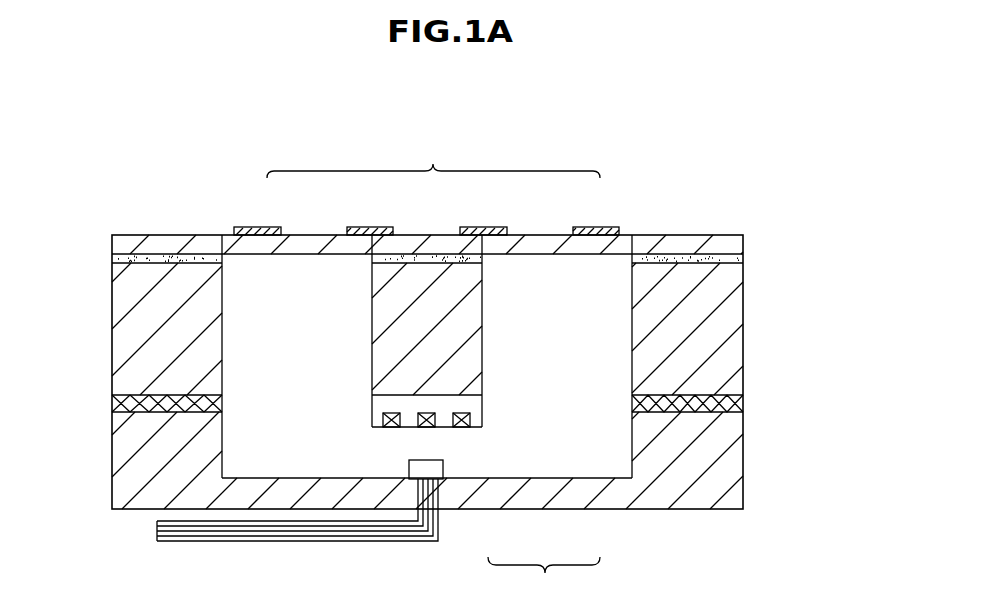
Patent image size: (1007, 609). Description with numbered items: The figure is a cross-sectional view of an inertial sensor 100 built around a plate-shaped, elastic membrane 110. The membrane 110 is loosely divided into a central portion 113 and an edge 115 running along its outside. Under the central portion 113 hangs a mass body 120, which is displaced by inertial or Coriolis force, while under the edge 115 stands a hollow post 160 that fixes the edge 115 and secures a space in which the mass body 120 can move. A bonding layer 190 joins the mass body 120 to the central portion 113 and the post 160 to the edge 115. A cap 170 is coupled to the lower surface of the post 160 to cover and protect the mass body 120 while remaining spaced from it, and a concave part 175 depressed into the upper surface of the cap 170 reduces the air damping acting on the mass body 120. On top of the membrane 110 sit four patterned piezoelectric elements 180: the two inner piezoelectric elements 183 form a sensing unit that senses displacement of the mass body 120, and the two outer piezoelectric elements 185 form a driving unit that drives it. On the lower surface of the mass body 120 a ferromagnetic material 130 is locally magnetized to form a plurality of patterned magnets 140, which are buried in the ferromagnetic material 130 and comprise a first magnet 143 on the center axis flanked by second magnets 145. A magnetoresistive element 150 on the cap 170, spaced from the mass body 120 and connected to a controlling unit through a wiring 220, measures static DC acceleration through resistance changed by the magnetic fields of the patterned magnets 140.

The inertial sensor 100 is at (243, 103).
The membrane 110 is at (756, 240).
The central portion 113 is at (433, 247).
The edge 115 is at (160, 245).
The mass body 120 is at (448, 337).
The ferromagnetic material 130 is at (470, 406).
The patterned magnets 140 is at (544, 579).
The first magnet 143 is at (427, 427).
The second magnets 145 is at (392, 427).
The magnetoresistive element 150 is at (415, 467).
The post 160 is at (124, 347).
The cap 170 is at (720, 470).
The concave part 175 is at (308, 461).
The piezoelectric element 180 is at (433, 159).
The inner piezoelectric elements 183 is at (371, 227).
The outer piezoelectric elements 185 is at (263, 227).
The bonding layer 190 is at (725, 260).
The wiring 220 is at (273, 533).